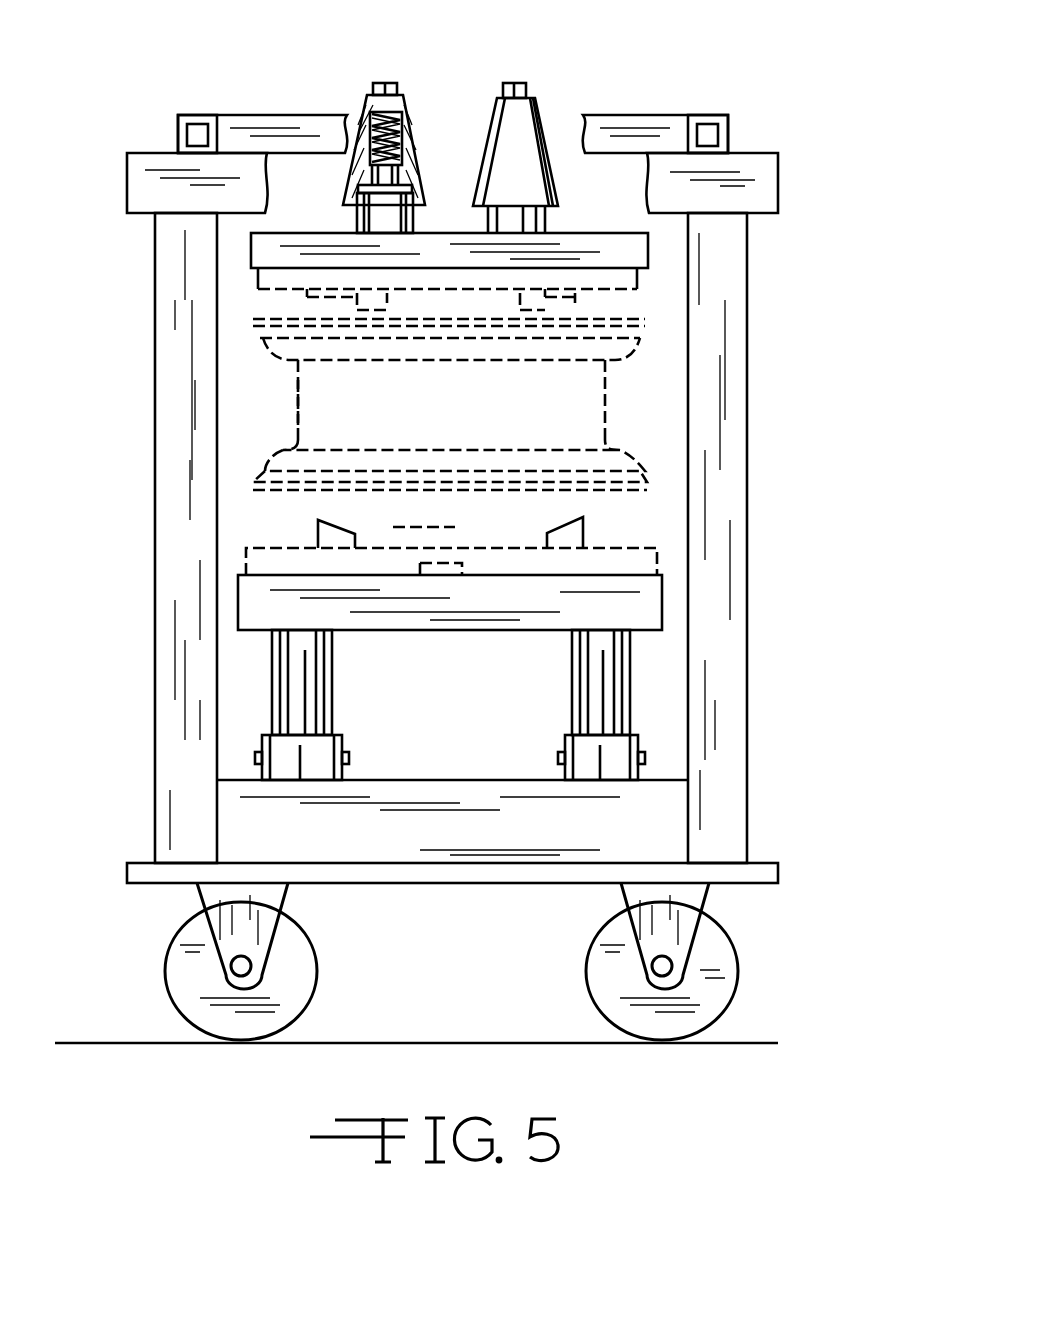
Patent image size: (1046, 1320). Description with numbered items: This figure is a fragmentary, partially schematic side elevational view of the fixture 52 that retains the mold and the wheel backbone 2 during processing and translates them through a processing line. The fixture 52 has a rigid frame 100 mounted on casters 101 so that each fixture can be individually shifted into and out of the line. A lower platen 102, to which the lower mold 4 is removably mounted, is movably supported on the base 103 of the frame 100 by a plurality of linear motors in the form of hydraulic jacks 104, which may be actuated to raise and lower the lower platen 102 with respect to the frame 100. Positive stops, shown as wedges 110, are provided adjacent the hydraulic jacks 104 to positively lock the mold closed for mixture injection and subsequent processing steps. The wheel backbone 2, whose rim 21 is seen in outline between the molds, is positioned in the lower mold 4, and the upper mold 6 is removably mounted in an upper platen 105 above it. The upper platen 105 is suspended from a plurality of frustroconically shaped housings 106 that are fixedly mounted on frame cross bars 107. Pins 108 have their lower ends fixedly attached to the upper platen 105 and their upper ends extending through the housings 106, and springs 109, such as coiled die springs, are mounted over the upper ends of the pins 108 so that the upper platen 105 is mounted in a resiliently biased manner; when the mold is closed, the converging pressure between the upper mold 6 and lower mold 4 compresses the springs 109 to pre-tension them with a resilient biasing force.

The wheel backbone 2 is at (634, 400).
The rim 21 is at (297, 425).
The lower mold 4 is at (790, 528).
The upper mold 6 is at (795, 297).
The fixture 52 is at (763, 153).
The rigid frame 100 is at (815, 572).
The casters 101 is at (393, 947).
The lower platen 102 is at (415, 665).
The base 103 is at (348, 872).
The hydraulic jacks 104 is at (783, 662).
The upper platen 105 is at (630, 252).
The frustroconically shaped housings 106 is at (540, 120).
The frame cross bars 107 is at (282, 132).
The pins 108 is at (373, 212).
The springs 109 is at (398, 125).
The wedges 110 is at (792, 728).